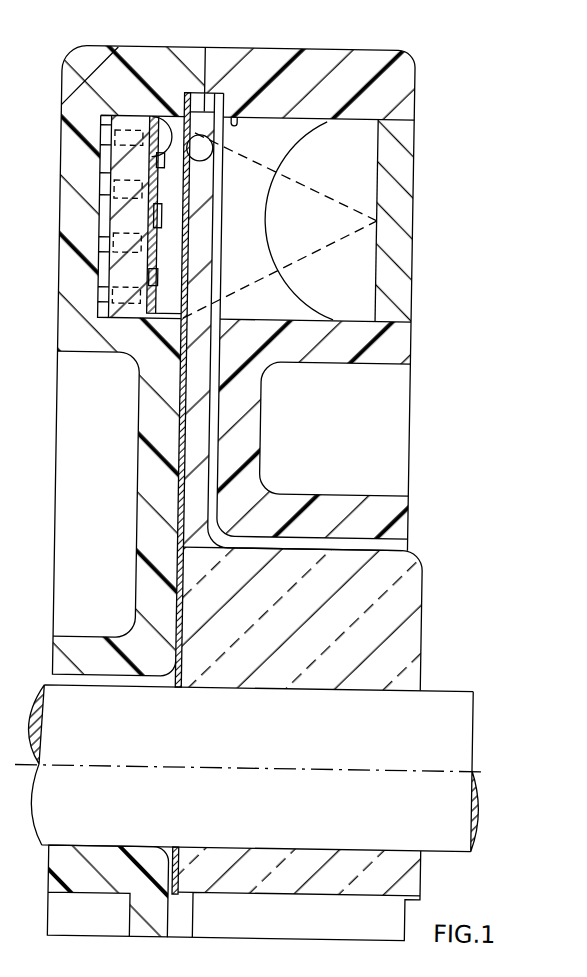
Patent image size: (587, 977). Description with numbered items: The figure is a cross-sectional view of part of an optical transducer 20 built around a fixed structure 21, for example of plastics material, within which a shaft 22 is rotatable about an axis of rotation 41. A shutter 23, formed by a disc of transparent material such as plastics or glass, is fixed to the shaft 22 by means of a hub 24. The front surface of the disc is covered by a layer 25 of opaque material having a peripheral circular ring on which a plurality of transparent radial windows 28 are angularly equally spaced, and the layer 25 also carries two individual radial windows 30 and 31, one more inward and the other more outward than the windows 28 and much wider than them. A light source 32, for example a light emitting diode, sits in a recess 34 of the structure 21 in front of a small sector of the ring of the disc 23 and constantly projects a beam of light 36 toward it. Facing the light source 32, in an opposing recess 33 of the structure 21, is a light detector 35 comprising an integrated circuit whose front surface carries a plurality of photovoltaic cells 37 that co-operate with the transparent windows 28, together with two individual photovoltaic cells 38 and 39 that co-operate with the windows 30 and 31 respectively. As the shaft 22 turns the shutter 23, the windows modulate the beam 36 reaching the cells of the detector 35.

The optical transducer 20 is at (195, 42).
The fixed structure 21 is at (218, 60).
The shaft 22 is at (451, 699).
The shutter 23 is at (200, 429).
The hub 24 is at (417, 587).
The layer of opaque material 25 is at (179, 541).
The transparent radial windows 28 is at (183, 201).
The individual radial window 30 is at (191, 159).
The individual radial window 31 is at (182, 303).
The light source 32 is at (393, 204).
The recess 33 is at (118, 322).
The recess 34 is at (231, 114).
The light detector 35 is at (123, 215).
The beam of light 36 is at (248, 155).
The photovoltaic cells 37 is at (164, 225).
The individual photovoltaic cell 38 is at (145, 116).
The individual photovoltaic cell 39 is at (160, 286).
The axis of rotation 41 is at (379, 774).